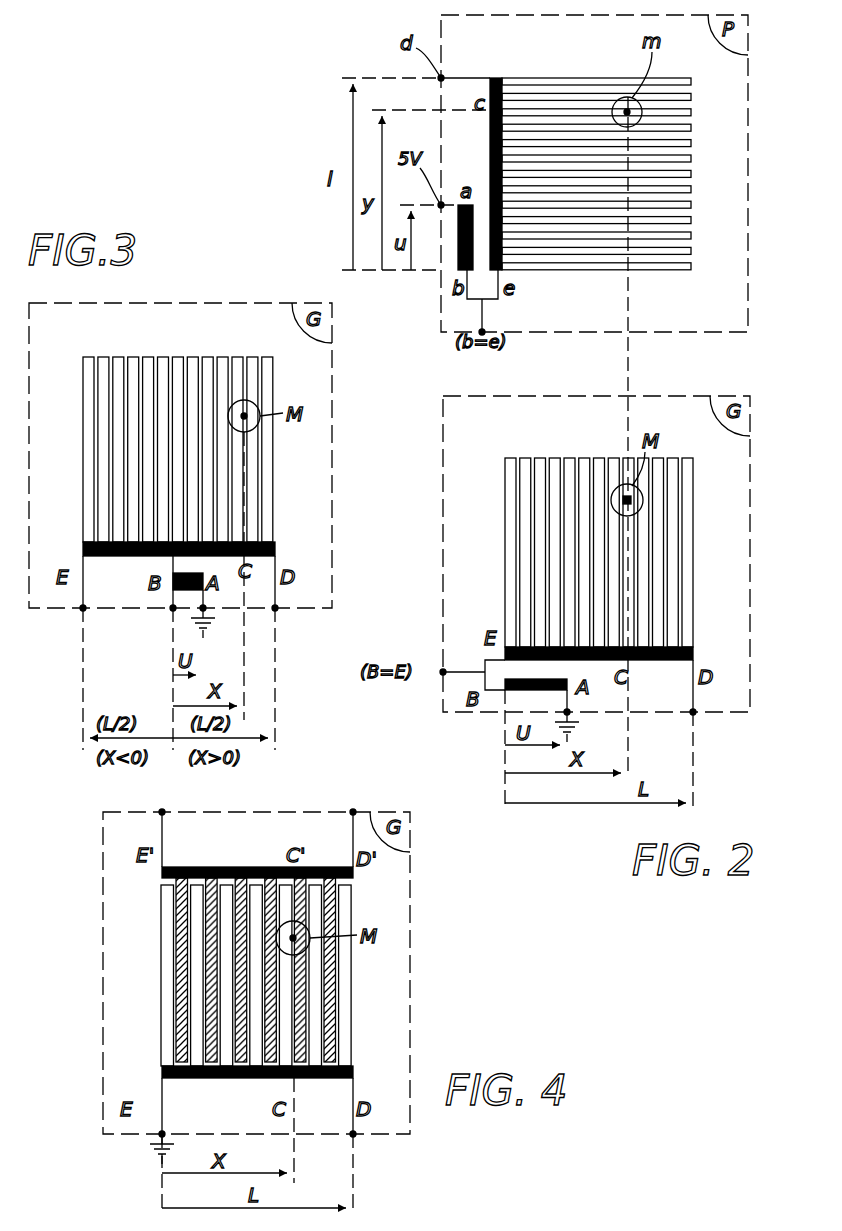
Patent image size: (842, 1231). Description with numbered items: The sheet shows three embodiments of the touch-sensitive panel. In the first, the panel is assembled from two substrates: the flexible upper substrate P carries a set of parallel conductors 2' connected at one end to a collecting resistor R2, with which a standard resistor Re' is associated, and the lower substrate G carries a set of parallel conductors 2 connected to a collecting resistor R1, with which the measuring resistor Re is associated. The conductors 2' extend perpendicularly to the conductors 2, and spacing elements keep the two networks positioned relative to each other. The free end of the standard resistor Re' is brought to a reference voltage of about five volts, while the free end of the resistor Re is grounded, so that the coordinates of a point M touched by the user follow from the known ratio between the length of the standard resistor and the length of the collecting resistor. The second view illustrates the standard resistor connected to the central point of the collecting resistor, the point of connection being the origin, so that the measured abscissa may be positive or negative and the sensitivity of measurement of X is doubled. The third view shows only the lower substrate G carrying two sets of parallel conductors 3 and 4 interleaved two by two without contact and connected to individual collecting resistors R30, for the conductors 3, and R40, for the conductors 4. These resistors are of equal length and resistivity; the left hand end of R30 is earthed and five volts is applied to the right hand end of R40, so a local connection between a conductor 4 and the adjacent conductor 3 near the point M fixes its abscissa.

In FIG. 2, the parallel conductors 2 is at (643, 552).
In FIG. 2, the parallel conductors 2' is at (644, 174).
In FIG. 4, the parallel conductors 3 is at (197, 996).
In FIG. 4, the parallel conductors 4 is at (298, 1010).
In FIG. 2, the collecting resistor R1 is at (693, 647).
In FIG. 2, the collecting resistor R2 is at (500, 78).
In FIG. 2, the measuring resistor Re is at (516, 718).
In FIG. 2, the standard resistor Re' is at (438, 259).
In FIG. 4, the collecting resistor R30 is at (240, 1078).
In FIG. 4, the collecting resistor R40 is at (237, 867).